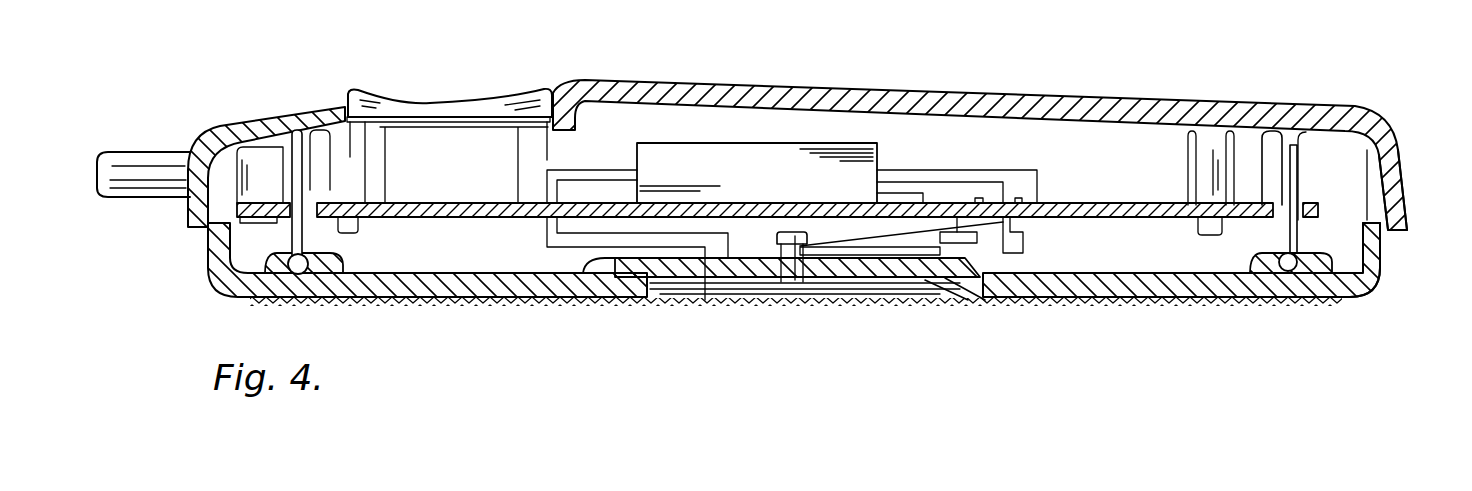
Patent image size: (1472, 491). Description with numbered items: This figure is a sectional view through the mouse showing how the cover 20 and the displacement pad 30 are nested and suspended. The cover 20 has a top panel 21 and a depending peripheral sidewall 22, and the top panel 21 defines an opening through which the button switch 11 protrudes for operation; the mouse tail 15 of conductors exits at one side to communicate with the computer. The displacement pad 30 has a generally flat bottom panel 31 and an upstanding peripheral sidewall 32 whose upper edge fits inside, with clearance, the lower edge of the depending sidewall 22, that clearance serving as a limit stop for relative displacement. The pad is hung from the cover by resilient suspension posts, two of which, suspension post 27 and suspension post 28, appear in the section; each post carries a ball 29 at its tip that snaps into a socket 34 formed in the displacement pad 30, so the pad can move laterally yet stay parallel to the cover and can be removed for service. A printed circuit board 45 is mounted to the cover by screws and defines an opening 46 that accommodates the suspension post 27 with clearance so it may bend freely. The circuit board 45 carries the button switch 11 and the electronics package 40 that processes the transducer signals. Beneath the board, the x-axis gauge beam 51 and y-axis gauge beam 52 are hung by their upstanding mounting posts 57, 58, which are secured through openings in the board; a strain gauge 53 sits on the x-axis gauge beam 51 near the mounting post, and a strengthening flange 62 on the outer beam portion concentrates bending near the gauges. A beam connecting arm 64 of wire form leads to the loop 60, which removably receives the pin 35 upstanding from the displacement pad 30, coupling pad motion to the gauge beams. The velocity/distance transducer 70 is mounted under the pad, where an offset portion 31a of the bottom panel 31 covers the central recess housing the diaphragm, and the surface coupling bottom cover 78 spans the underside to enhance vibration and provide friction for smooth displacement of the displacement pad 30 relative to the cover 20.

The button switch 11 is at (378, 93).
The mouse tail 15 is at (140, 150).
The cover 20 is at (715, 83).
The top panel 21 is at (880, 87).
The depending peripheral sidewall 22 is at (1402, 182).
The suspension post 27 is at (1277, 172).
The suspension post 28 is at (312, 257).
The ball 29 is at (1277, 267).
The displacement pad 30 is at (1366, 297).
The bottom panel 31 is at (510, 282).
The offset portion of the bottom panel 31a is at (592, 266).
The upstanding peripheral sidewall 32 is at (1380, 250).
The socket 34 is at (1297, 270).
The pin 35 is at (797, 272).
The electronics package 40 is at (663, 145).
The printed circuit board 45 is at (1152, 203).
The opening 46 is at (1300, 200).
The x-axis gauge beam 51 is at (870, 240).
The y-axis gauge beam 52 is at (1027, 227).
The strain gauge 53 is at (955, 207).
The mounting post 57 is at (983, 198).
The mounting post 58 is at (1018, 200).
The loop 60 is at (770, 253).
The strengthening flange 62 is at (1013, 262).
The beam connecting arm 64 is at (976, 264).
The velocity/distance transducer 70 is at (705, 309).
The surface coupling bottom cover 78 is at (1160, 301).